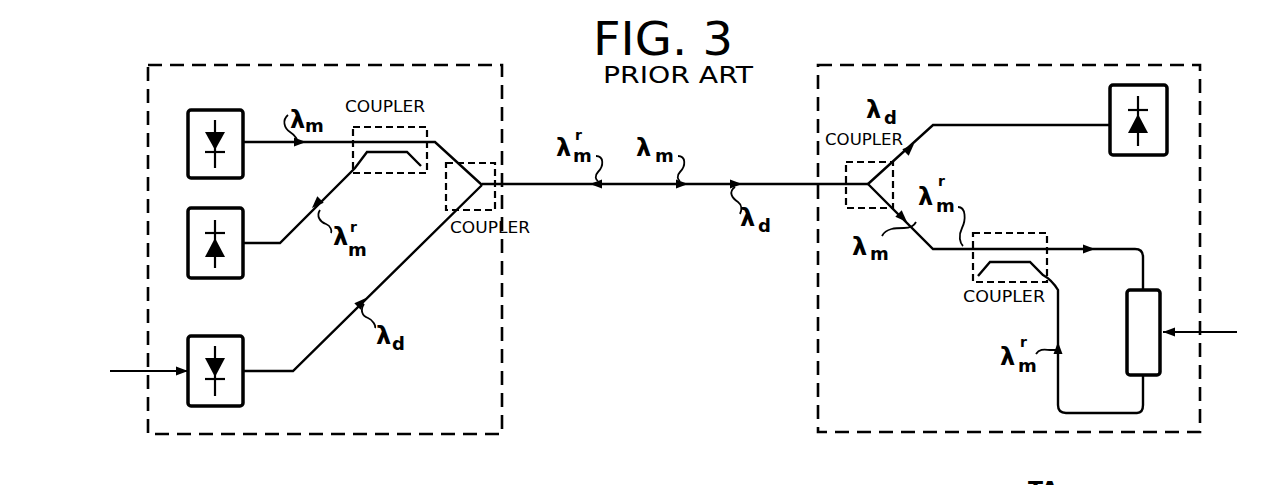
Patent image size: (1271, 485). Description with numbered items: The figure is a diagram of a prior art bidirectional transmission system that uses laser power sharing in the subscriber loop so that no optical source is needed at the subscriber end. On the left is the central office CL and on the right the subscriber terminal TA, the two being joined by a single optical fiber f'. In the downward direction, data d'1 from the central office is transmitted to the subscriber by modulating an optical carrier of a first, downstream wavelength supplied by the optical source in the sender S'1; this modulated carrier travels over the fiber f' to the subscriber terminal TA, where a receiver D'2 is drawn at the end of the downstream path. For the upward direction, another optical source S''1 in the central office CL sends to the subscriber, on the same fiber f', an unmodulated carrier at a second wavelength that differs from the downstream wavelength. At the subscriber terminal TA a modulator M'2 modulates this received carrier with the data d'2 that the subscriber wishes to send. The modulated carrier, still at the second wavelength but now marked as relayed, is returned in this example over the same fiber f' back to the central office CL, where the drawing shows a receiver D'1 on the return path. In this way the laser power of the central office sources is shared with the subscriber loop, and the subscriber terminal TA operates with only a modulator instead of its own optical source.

The central office CL is at (355, 65).
The optical source S''1 is at (167, 126).
The receiver in central office D'1 is at (178, 226).
The sender S'1 is at (160, 352).
The data d'1 is at (147, 352).
The fiber f' is at (675, 207).
The subscriber terminal TA is at (990, 65).
The receiver in subscriber terminal D'2 is at (1111, 127).
The modulator M'2 is at (1118, 331).
The data d'2 is at (1203, 312).